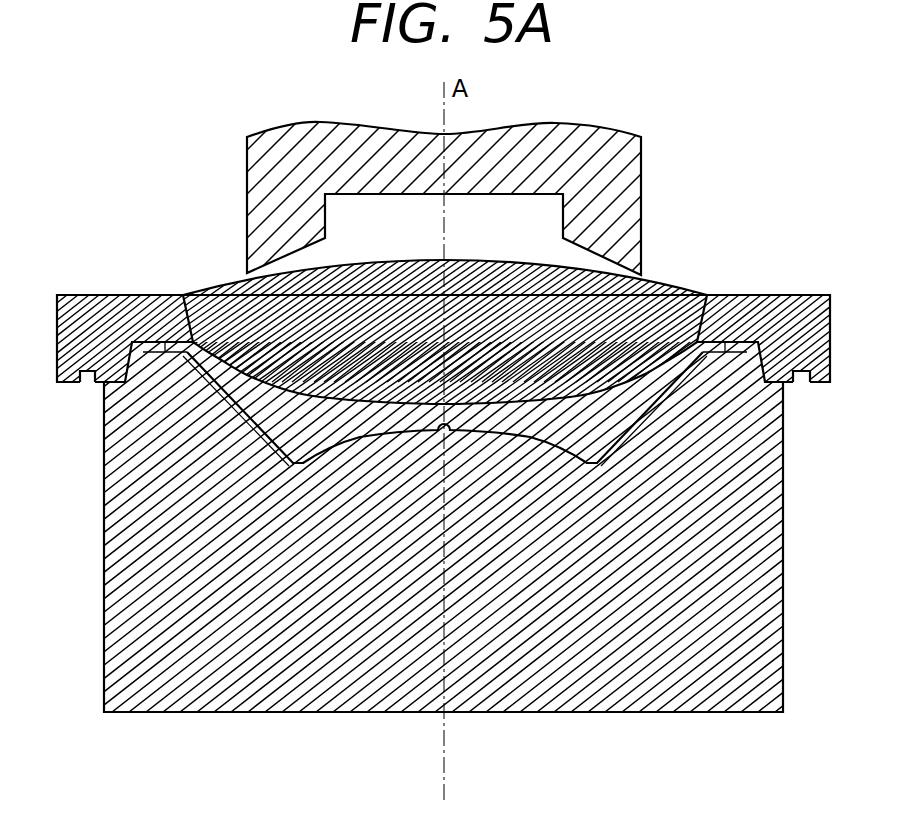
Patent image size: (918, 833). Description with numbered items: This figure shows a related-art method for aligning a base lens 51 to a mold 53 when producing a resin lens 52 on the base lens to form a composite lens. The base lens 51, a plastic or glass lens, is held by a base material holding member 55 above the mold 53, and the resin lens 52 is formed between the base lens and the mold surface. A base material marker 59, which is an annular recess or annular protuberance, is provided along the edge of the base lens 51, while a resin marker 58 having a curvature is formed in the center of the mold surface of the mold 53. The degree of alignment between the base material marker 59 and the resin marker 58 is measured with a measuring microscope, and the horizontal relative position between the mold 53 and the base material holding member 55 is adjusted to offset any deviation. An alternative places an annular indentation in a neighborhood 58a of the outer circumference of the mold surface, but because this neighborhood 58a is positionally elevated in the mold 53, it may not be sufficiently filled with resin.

The base lens 51 is at (767, 305).
The resin lens 52 is at (627, 417).
The mold 53 is at (667, 683).
The base material holding member 55 is at (625, 172).
The resin marker 58 is at (440, 428).
The neighborhood of the outer circumference of the mold surface 58a is at (165, 353).
The base material marker 59 is at (88, 383).